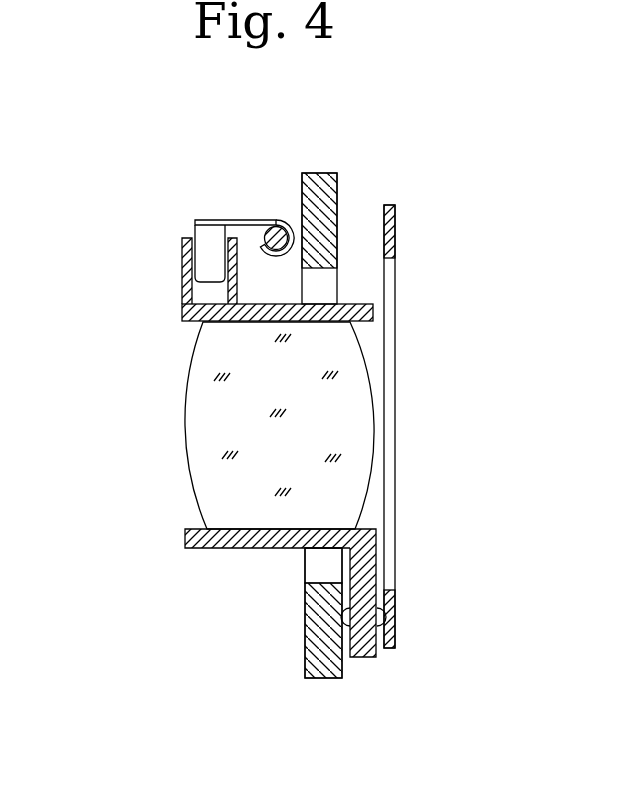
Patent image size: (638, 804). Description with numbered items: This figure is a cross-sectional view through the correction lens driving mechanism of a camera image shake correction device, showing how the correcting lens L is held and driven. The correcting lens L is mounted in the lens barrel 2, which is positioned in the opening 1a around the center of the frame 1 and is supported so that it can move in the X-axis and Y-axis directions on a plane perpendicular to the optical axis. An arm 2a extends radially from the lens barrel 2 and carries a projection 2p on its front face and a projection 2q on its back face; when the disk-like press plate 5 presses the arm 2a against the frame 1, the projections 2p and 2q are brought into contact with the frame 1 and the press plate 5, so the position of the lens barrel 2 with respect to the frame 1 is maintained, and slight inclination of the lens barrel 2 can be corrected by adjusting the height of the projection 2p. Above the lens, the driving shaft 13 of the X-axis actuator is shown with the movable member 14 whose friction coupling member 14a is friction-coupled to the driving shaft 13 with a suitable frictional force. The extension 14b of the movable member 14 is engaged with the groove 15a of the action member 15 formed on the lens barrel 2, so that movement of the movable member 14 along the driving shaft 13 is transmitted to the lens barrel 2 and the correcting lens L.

The frame 1 is at (309, 406).
The opening 1a is at (310, 567).
The lens barrel 2 is at (315, 618).
The arm 2a is at (362, 657).
The projection 2p is at (348, 582).
The projection 2q is at (397, 597).
The press plate 5 is at (397, 643).
The driving shaft 13 is at (278, 222).
The movable member 14 is at (188, 199).
The friction coupling member 14a is at (260, 241).
The extension 14b is at (205, 248).
The action member 15 is at (230, 296).
The groove 15a is at (202, 296).
The correcting lens L is at (205, 472).